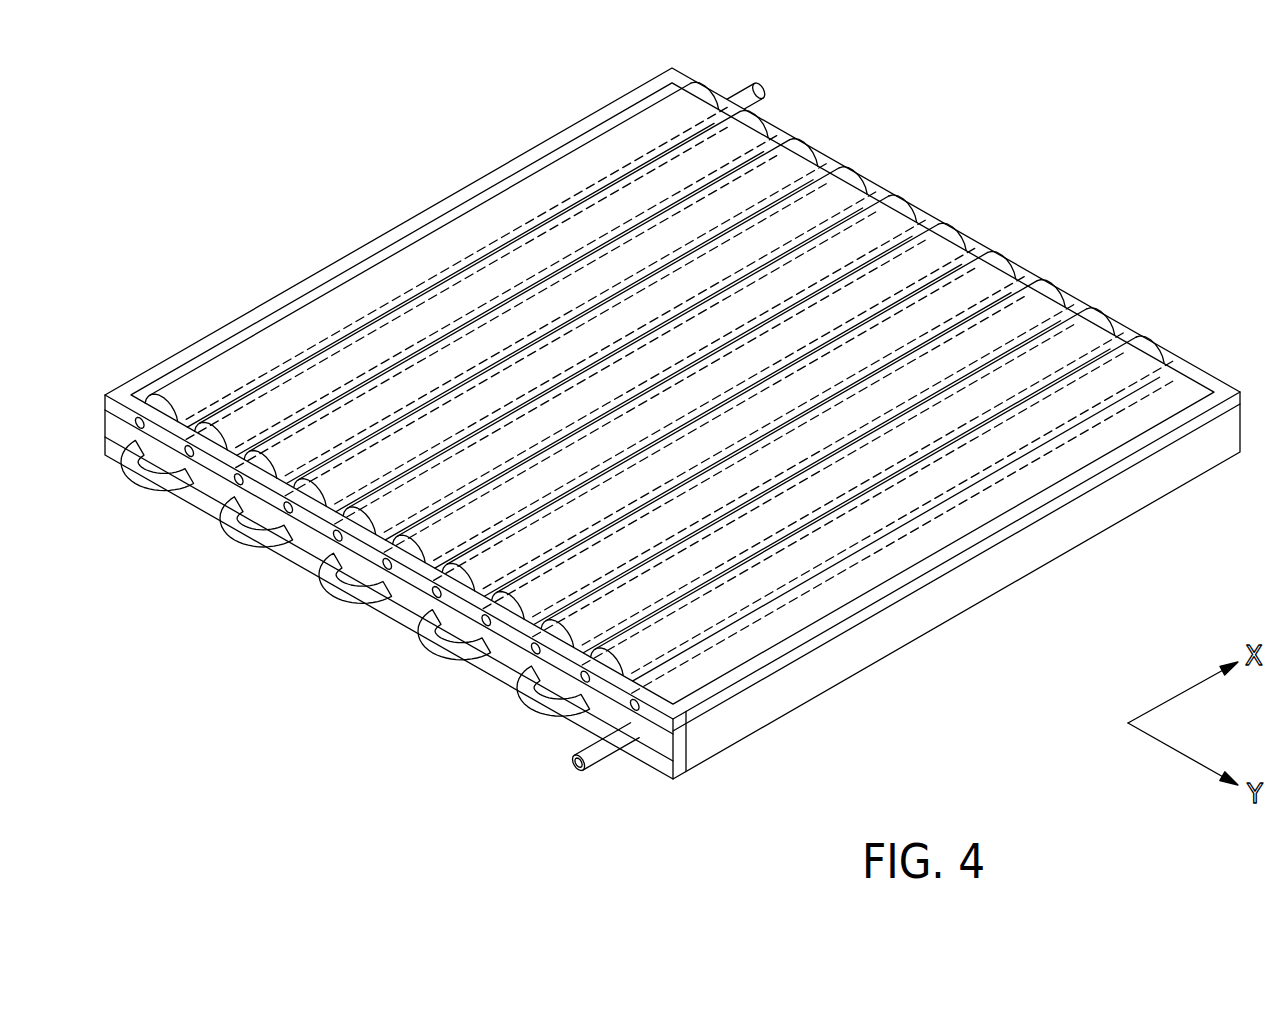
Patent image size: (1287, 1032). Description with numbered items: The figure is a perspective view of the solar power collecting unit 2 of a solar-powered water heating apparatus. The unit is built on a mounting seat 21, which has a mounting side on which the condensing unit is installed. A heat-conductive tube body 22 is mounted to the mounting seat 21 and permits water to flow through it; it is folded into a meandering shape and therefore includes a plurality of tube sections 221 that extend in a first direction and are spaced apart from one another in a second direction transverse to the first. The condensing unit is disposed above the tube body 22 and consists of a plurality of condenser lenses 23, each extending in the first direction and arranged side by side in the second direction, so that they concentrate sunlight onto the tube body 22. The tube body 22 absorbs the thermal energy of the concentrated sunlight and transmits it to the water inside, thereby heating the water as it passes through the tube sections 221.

The solar power collecting unit 2 is at (672, 467).
The mounting seat 21 is at (1110, 538).
The heat-conductive tube body 22 is at (647, 474).
The tube sections 221 is at (452, 296).
The condenser lenses 23 is at (1043, 307).